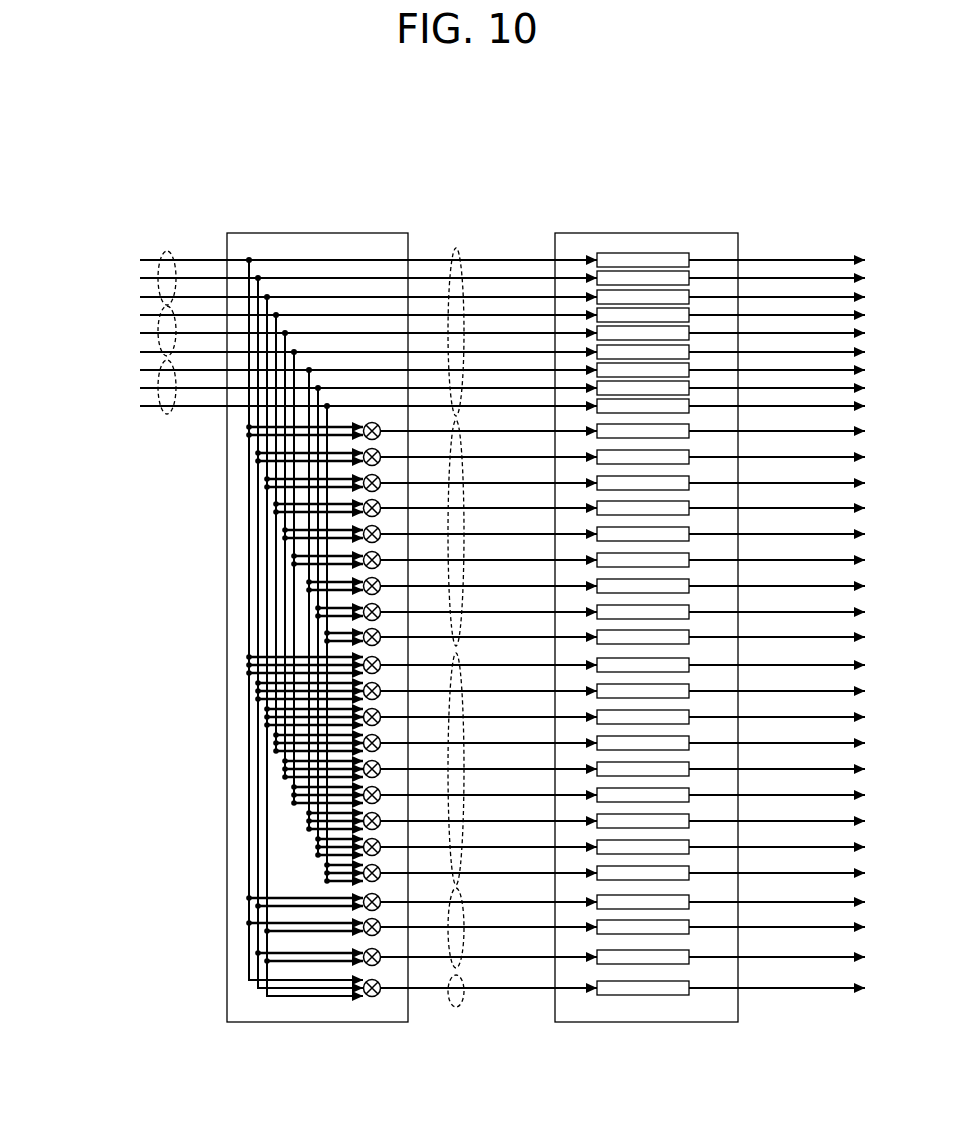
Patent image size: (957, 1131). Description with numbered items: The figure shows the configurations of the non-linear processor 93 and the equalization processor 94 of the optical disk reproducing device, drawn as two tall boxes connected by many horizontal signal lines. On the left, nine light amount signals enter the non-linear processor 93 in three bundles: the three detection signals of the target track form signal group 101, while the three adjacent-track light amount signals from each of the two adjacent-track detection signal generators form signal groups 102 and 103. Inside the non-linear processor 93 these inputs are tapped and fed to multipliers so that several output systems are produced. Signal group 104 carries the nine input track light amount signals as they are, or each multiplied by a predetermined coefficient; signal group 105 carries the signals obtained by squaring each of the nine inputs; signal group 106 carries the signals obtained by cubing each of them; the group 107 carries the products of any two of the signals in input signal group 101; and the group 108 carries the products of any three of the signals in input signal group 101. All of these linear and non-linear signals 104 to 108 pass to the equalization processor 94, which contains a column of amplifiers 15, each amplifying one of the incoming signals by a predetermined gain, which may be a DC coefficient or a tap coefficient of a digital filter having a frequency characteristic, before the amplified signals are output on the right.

The amplifier 15 is at (667, 260).
The non-linear processor 93 is at (290, 1010).
The equalization processor 94 is at (710, 618).
The signal group 101 is at (175, 272).
The signal group 102 is at (175, 327).
The signal group 103 is at (175, 382).
The signal group 104 is at (455, 248).
The signal group 105 is at (461, 446).
The signal group 106 is at (461, 680).
The group of products of any two signals 107 is at (461, 918).
The group of products of any three signals 108 is at (455, 1007).